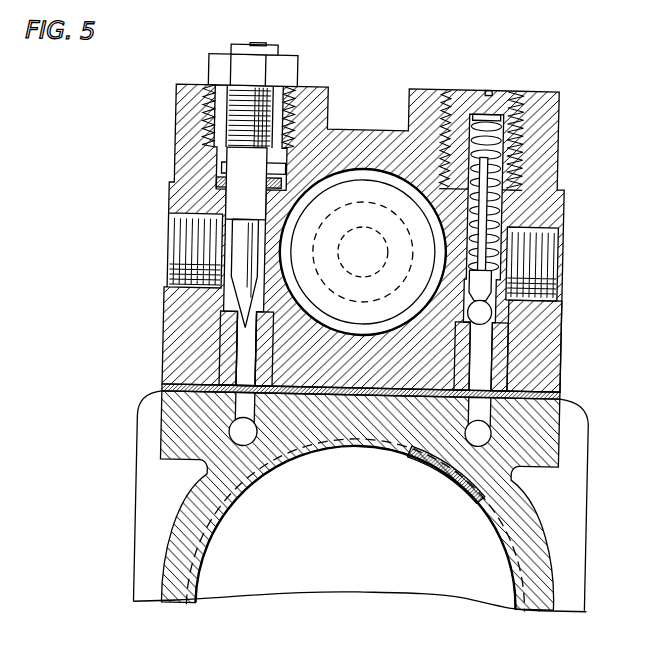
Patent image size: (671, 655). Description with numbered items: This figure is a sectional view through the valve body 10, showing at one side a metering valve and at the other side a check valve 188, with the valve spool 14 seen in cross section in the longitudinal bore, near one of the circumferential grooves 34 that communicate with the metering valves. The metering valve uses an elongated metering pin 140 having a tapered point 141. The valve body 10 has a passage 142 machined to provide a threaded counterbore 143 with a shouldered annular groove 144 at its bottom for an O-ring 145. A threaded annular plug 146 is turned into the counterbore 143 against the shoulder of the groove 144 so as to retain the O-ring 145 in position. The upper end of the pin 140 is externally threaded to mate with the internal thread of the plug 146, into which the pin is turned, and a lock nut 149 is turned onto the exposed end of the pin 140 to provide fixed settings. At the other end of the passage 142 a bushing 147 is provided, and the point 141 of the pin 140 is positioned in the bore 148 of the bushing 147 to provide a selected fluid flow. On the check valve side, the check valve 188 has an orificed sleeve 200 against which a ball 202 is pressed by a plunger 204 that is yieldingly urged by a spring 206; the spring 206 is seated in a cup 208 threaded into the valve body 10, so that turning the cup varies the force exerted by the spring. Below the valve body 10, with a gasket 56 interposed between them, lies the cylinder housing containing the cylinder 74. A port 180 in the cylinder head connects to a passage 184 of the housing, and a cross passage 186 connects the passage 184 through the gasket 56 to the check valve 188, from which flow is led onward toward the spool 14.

The valve body 10 is at (313, 88).
The valve spool 14 is at (372, 266).
The circumferential groove 34 is at (360, 170).
The gasket 56 is at (556, 389).
The cylinder 74 is at (294, 551).
The metering pin 140 is at (280, 205).
The tapered point 141 is at (227, 296).
The passage 142 is at (212, 313).
The threaded counterbore 143 is at (190, 141).
The shouldered annular groove 144 is at (214, 181).
The O-ring 145 is at (210, 196).
The threaded annular plug 146 is at (198, 101).
The bushing 147 is at (225, 350).
The bore 148 is at (224, 376).
The lock nut 149 is at (202, 66).
The port 180 is at (460, 461).
The passage 184 is at (592, 476).
The cross passage 186 is at (487, 432).
The check valve 188 is at (528, 333).
The orificed sleeve 200 is at (501, 362).
The ball 202 is at (494, 307).
The plunger 204 is at (480, 197).
The spring 206 is at (486, 142).
The cup 208 is at (516, 137).